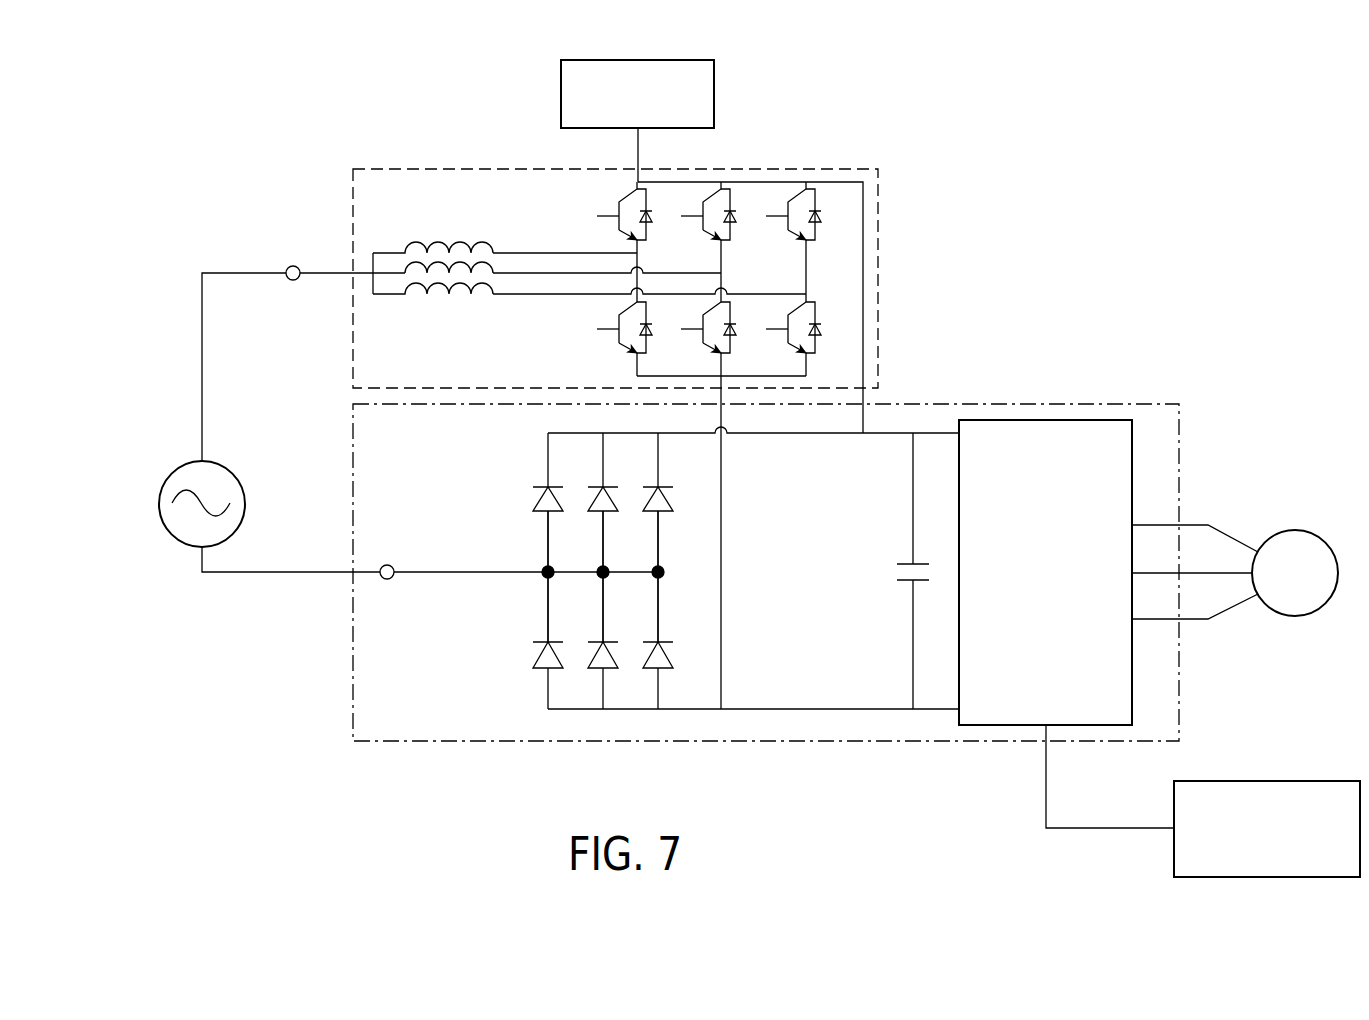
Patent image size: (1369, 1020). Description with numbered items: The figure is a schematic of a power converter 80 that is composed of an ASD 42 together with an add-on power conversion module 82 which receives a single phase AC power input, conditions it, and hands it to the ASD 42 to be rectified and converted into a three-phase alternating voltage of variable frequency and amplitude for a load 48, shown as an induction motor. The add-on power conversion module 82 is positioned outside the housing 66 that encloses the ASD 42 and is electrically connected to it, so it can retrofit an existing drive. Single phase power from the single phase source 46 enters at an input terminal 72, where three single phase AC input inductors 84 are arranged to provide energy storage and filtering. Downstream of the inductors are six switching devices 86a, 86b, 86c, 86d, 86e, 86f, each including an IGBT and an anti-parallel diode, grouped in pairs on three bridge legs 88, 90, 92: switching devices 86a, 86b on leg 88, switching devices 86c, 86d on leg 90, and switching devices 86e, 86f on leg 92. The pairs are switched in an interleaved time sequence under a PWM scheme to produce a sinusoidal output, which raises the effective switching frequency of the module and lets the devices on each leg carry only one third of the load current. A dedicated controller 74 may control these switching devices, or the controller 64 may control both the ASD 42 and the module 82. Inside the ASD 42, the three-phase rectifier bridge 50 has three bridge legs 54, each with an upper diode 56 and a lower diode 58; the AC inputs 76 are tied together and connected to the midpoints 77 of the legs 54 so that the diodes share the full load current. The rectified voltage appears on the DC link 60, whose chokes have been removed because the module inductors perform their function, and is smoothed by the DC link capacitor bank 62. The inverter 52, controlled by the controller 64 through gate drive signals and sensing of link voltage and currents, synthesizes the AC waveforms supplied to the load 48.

The ASD 42 is at (1160, 364).
The single phase source 46 is at (172, 535).
The load 48 is at (1292, 617).
The three-phase rectifier bridge 50 is at (697, 576).
The inverter circuit 52 is at (996, 726).
The bridge legs 54 is at (660, 606).
The upper diode 56 is at (540, 497).
The lower diode 58 is at (608, 655).
The DC link 60 is at (818, 436).
The DC link capacitor bank 62 is at (905, 578).
The controller 64 is at (1267, 781).
The housing 66 is at (1180, 457).
The input terminal 72 is at (331, 270).
The dedicated controller 74 is at (714, 94).
The AC inputs 76 is at (572, 571).
The midpoints 77 is at (662, 567).
The power converter 80 is at (1160, 132).
The add-on power conversion module 82 is at (855, 143).
The single phase AC input inductors 84 is at (416, 267).
The switching device 86a is at (612, 353).
The switching device 86b is at (618, 190).
The switching device 86c is at (708, 350).
The switching device 86d is at (708, 240).
The switching device 86e is at (826, 306).
The switching device 86f is at (826, 196).
The bridge leg 88 is at (636, 250).
The bridge leg 90 is at (722, 268).
The bridge leg 92 is at (808, 273).